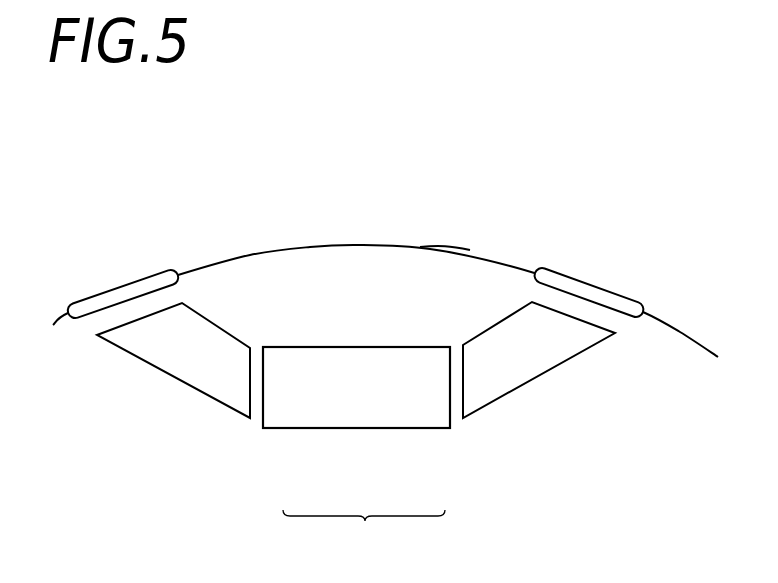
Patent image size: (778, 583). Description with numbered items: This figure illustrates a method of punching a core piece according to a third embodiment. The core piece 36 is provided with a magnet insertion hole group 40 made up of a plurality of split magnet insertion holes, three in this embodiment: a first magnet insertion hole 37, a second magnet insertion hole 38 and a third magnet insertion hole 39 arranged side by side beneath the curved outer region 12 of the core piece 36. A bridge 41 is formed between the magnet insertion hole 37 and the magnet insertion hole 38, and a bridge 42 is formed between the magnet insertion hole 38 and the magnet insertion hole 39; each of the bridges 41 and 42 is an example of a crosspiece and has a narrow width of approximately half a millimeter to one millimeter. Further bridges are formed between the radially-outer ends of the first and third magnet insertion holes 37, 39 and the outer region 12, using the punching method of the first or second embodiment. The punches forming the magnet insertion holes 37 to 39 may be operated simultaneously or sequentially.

The outer region 12 is at (223, 240).
The core piece 36 is at (445, 247).
The first magnet insertion hole 37 is at (192, 372).
The magnet insertion hole 38 is at (358, 383).
The third magnet insertion hole 39 is at (502, 372).
The magnet insertion hole group 40 is at (364, 535).
The bridge 41 is at (257, 377).
The bridge 42 is at (455, 372).